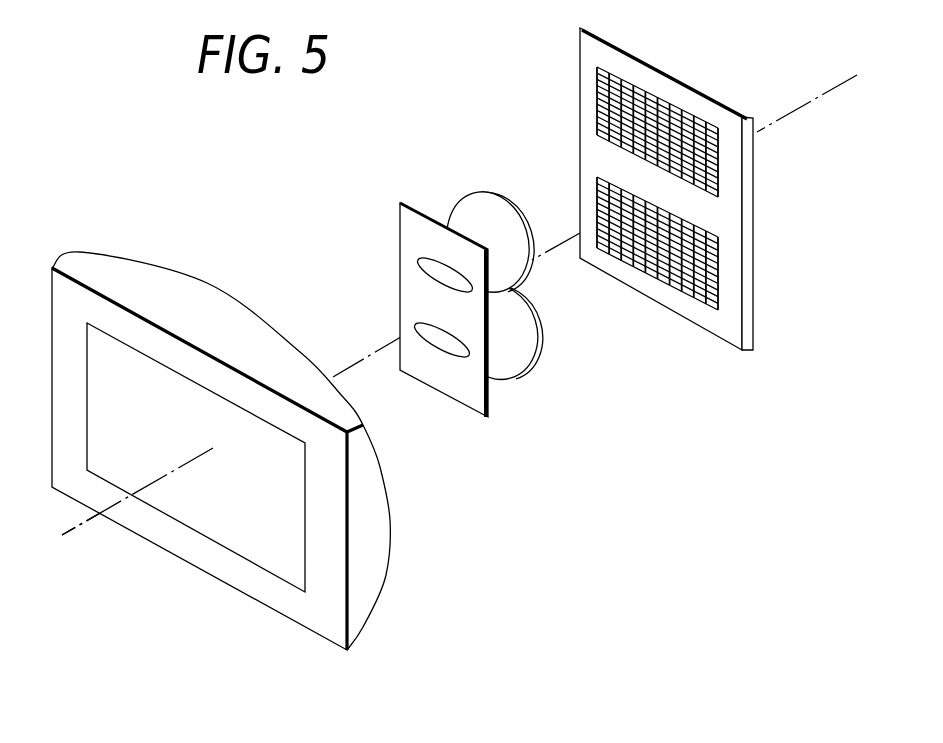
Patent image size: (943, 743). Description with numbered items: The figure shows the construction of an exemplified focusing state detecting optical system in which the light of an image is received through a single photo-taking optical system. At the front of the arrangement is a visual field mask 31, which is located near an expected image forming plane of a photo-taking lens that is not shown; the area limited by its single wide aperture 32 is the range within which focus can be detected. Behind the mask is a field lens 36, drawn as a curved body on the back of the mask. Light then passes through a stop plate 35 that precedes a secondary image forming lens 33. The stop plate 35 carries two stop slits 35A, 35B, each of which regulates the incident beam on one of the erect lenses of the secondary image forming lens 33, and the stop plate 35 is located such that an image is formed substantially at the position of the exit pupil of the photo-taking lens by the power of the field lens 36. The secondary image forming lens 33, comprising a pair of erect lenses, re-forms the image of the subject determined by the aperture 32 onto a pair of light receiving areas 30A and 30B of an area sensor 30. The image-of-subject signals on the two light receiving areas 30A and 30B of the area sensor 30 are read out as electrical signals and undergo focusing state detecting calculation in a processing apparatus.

The area sensor 30 is at (757, 208).
The light receiving area 30A is at (667, 100).
The light receiving area 30B is at (667, 285).
The secondary image forming lens 33 is at (473, 193).
The stop plate 35 is at (484, 399).
The stop slit 35A is at (418, 257).
The stop slit 35B is at (444, 352).
The visual field mask 31 is at (320, 627).
The aperture 32 is at (197, 517).
The field lens 36 is at (388, 551).